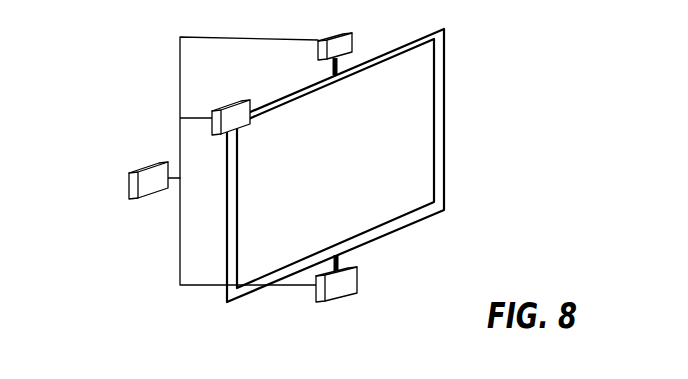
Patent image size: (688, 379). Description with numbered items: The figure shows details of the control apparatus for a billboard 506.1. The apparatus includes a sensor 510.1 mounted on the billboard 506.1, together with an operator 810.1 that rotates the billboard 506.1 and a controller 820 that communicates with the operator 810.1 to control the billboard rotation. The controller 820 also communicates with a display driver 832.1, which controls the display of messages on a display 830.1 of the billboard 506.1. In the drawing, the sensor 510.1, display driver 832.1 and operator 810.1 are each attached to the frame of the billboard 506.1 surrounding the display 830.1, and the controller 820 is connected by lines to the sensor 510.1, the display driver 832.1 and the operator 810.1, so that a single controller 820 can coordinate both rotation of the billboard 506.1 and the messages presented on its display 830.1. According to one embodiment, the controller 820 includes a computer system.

The billboard 506.1 is at (446, 161).
The display 830.1 is at (335, 163).
The sensor 510.1 is at (348, 35).
The display driver 832.1 is at (236, 101).
The controller 820 is at (133, 170).
The operator 810.1 is at (357, 269).